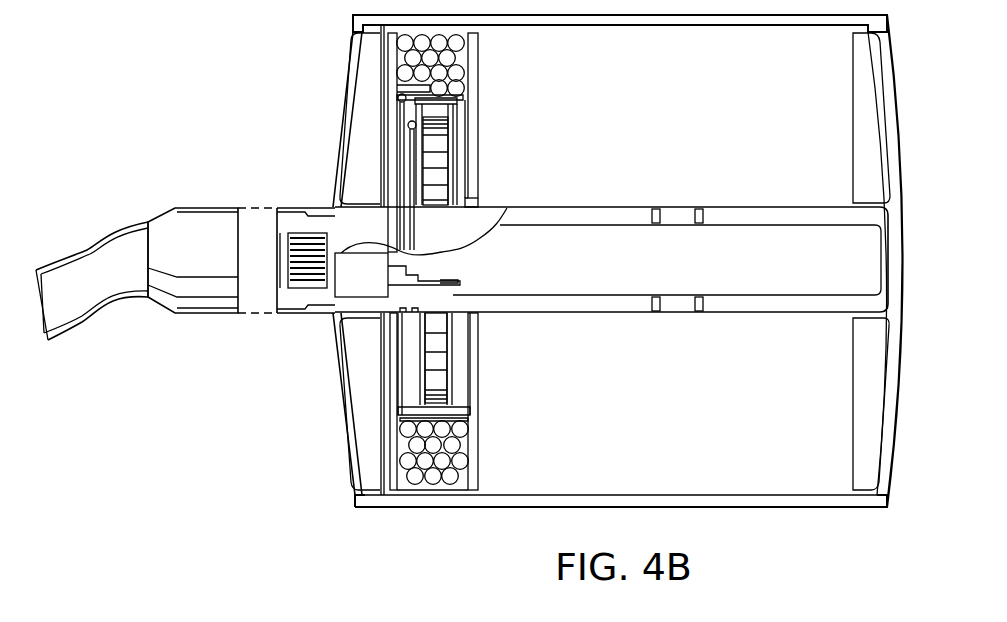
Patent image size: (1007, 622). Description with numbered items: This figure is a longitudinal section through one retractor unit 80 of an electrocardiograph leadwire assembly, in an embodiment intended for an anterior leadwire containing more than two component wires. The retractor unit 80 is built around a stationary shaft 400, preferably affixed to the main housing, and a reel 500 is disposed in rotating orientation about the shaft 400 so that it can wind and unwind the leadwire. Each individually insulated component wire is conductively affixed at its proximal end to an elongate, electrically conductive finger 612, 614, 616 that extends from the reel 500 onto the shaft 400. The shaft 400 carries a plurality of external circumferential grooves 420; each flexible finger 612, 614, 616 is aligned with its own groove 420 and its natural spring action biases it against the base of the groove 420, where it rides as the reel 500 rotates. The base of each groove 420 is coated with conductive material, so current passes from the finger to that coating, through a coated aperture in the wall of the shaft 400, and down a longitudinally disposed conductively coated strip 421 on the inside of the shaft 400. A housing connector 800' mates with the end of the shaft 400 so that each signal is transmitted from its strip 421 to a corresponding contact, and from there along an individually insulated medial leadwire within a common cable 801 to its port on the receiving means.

The stationary shaft 400 is at (754, 207).
The external circumferential groove 420 is at (370, 250).
The longitudinally disposed conductively coated strip 421 is at (465, 283).
The retractor unit 80 is at (483, 68).
The reel 500 is at (467, 129).
The electrically conductive finger 616 is at (458, 190).
The electrically conductive finger 612 is at (410, 117).
The electrically conductive finger 614 is at (408, 183).
The common cable 801 is at (74, 237).
The housing connector 800' is at (241, 301).